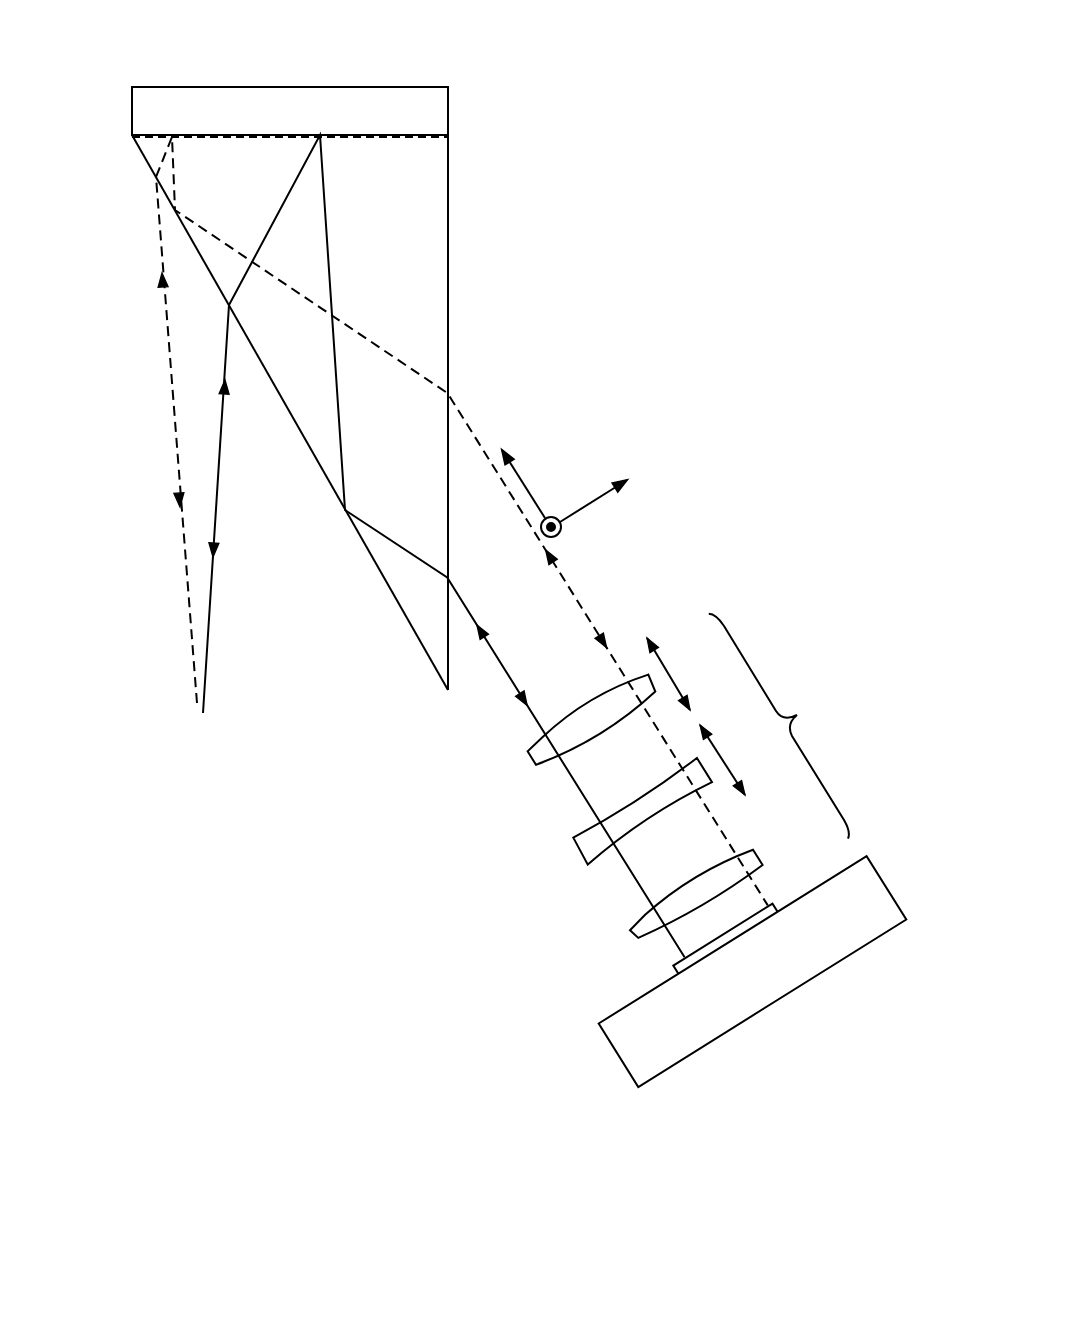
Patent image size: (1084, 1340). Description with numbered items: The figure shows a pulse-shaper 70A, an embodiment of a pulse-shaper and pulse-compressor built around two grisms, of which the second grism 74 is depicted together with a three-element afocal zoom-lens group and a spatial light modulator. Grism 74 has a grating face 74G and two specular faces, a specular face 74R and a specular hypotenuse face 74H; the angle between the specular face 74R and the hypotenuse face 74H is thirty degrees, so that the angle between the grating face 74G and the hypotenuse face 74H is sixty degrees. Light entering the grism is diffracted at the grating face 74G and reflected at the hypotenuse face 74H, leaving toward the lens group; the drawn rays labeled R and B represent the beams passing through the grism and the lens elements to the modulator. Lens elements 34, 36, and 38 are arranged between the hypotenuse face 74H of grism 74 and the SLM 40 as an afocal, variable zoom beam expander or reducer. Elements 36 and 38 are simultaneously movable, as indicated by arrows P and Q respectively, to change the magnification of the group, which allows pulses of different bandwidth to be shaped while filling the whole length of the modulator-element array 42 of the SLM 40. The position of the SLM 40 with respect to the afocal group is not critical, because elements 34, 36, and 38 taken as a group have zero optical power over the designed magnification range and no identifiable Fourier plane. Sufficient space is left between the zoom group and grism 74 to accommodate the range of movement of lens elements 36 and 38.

The pulse-shaper 70A is at (318, 1083).
The grism 74 is at (235, 85).
The grating face 74G is at (353, 135).
The specular face 74R is at (448, 283).
The hypotenuse face 74H is at (387, 587).
The lens element 38 is at (533, 750).
The lens element 36 is at (590, 836).
The lens element 34 is at (643, 920).
The modulator-element array 42 is at (680, 955).
The SLM 40 is at (720, 1040).
The red beam R is at (217, 490).
The blue beam B is at (172, 423).
The arrow Q is at (668, 674).
The arrow P is at (722, 760).